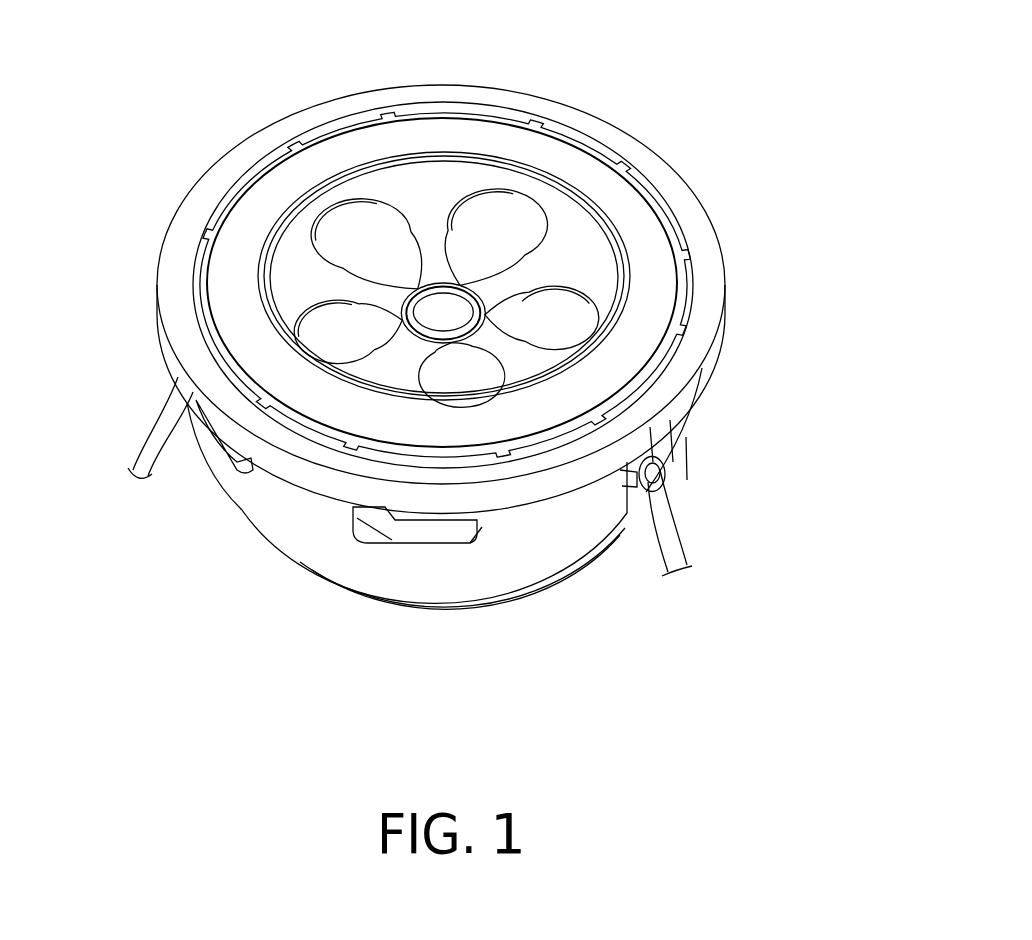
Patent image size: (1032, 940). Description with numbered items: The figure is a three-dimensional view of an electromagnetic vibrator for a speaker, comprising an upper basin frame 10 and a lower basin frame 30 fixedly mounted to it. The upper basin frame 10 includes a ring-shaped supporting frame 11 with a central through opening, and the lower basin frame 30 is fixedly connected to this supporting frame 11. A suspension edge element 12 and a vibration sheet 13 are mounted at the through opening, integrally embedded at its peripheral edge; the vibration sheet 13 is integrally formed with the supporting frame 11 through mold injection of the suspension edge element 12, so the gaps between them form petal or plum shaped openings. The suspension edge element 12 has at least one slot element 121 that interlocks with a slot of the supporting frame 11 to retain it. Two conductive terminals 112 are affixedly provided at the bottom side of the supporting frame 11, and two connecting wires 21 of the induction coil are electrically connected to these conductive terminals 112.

The upper basin frame 10 is at (712, 301).
The supporting frame 11 is at (693, 363).
The suspension edge element 12 is at (428, 168).
The vibration sheet 13 is at (512, 212).
The connecting wires 21 is at (150, 433).
The lower basin frame 30 is at (505, 560).
The conductive terminals 112 is at (657, 452).
The slot element 121 is at (232, 193).